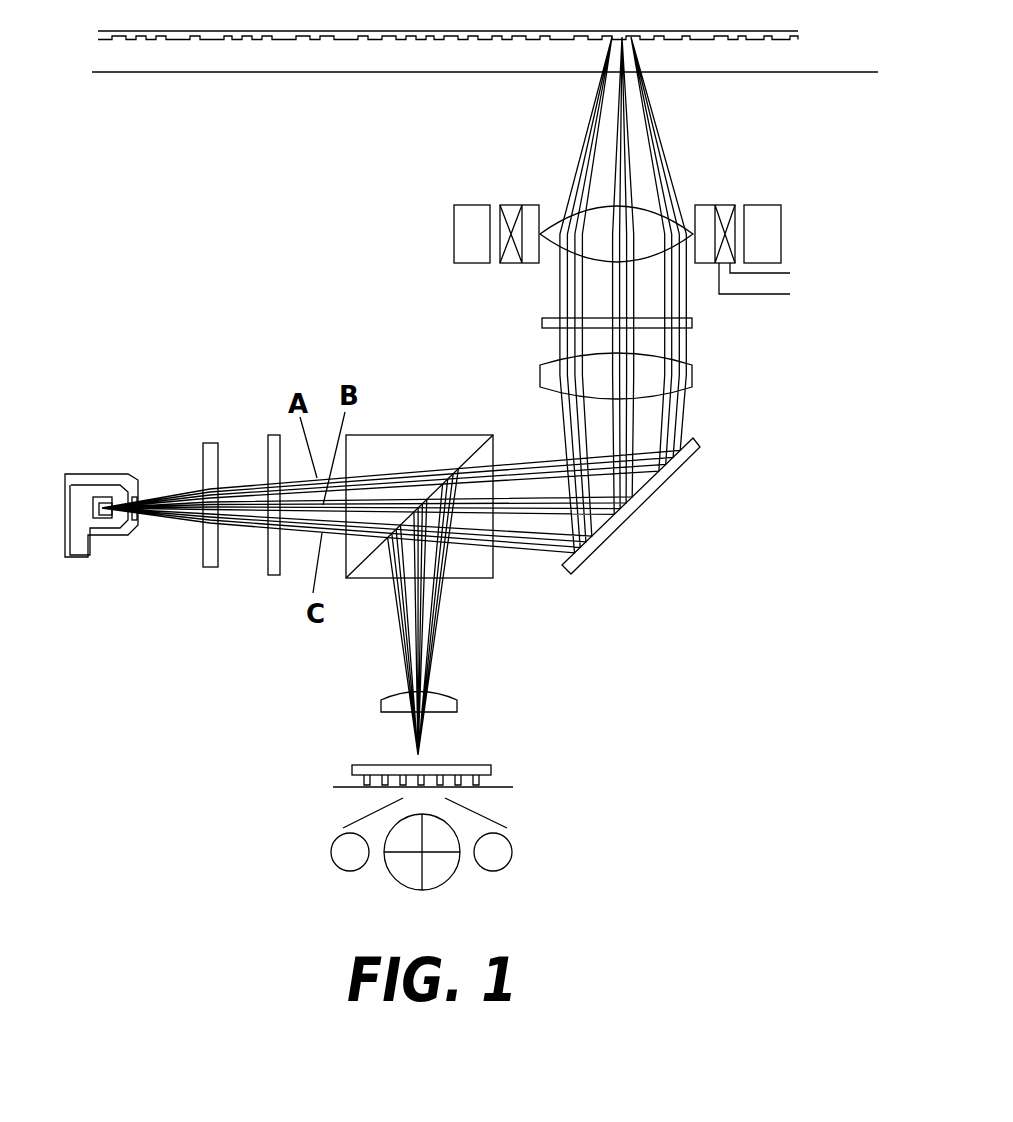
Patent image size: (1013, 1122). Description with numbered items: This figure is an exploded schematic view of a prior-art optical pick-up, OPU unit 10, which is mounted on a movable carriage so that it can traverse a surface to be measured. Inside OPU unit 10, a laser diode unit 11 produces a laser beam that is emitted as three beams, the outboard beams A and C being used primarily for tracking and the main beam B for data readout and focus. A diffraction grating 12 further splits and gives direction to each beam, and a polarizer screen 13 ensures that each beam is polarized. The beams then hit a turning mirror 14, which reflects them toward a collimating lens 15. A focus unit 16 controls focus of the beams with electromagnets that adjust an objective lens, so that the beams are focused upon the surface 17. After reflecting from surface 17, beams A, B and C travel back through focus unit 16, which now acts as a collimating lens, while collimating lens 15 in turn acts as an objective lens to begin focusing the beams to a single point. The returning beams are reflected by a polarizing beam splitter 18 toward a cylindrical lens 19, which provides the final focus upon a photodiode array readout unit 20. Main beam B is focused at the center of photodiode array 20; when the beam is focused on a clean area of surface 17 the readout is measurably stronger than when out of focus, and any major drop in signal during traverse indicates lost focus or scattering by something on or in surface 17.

The OPU unit 10 is at (742, 610).
The laser diode unit 11 is at (92, 498).
The diffraction grating 12 is at (212, 443).
The polarizer screen 13 is at (275, 435).
The turning mirror 14 is at (637, 512).
The collimating lens 15 is at (693, 373).
The focus unit 16 is at (738, 190).
The surface 17 is at (298, 40).
The polarizing beam splitter 18 is at (483, 442).
The cylindrical lens 19 is at (457, 703).
The photodiode array readout unit 20 is at (491, 772).